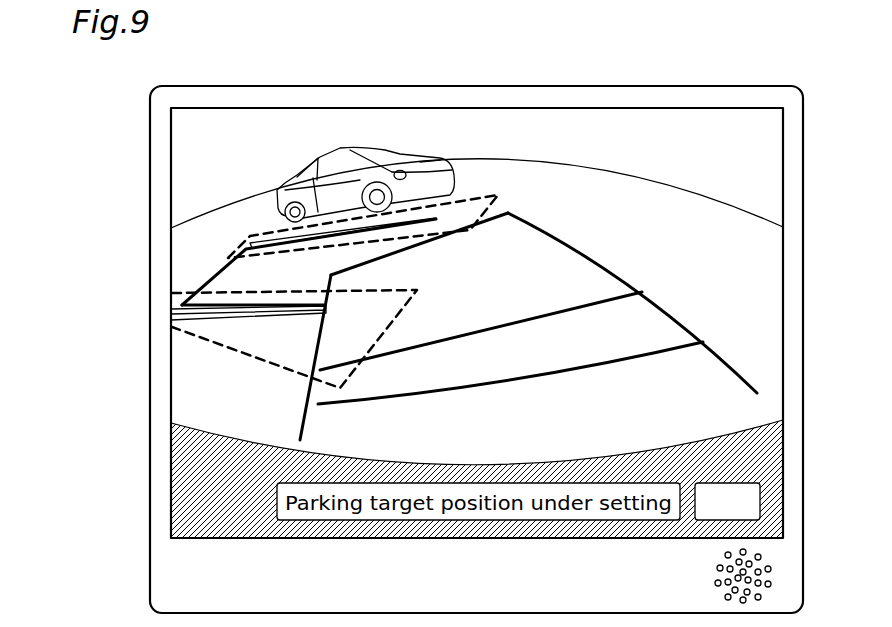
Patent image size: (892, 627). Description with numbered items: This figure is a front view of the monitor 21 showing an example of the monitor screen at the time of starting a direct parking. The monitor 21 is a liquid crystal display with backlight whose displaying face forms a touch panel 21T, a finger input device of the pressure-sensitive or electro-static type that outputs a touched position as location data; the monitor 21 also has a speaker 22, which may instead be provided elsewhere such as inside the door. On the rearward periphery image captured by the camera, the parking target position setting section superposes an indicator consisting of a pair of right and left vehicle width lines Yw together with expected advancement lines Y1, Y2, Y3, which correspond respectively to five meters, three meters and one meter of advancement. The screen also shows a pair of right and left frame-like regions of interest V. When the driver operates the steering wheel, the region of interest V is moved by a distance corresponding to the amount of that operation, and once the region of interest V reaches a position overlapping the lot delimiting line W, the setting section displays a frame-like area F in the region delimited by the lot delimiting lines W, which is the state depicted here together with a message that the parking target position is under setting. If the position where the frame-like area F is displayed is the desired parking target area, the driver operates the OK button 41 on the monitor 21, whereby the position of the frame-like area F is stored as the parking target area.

The monitor 21 is at (249, 260).
The touch panel 21T is at (180, 303).
The speaker 22 is at (706, 566).
The OK button 41 is at (728, 484).
The frame-like area F is at (218, 258).
The lot delimiting line W is at (270, 233).
The region of interest V is at (498, 195).
The expected advancement line Y1 is at (460, 228).
The expected advancement line Y2 is at (550, 312).
The expected advancement line Y3 is at (493, 385).
The vehicle width lines Yw is at (300, 428).